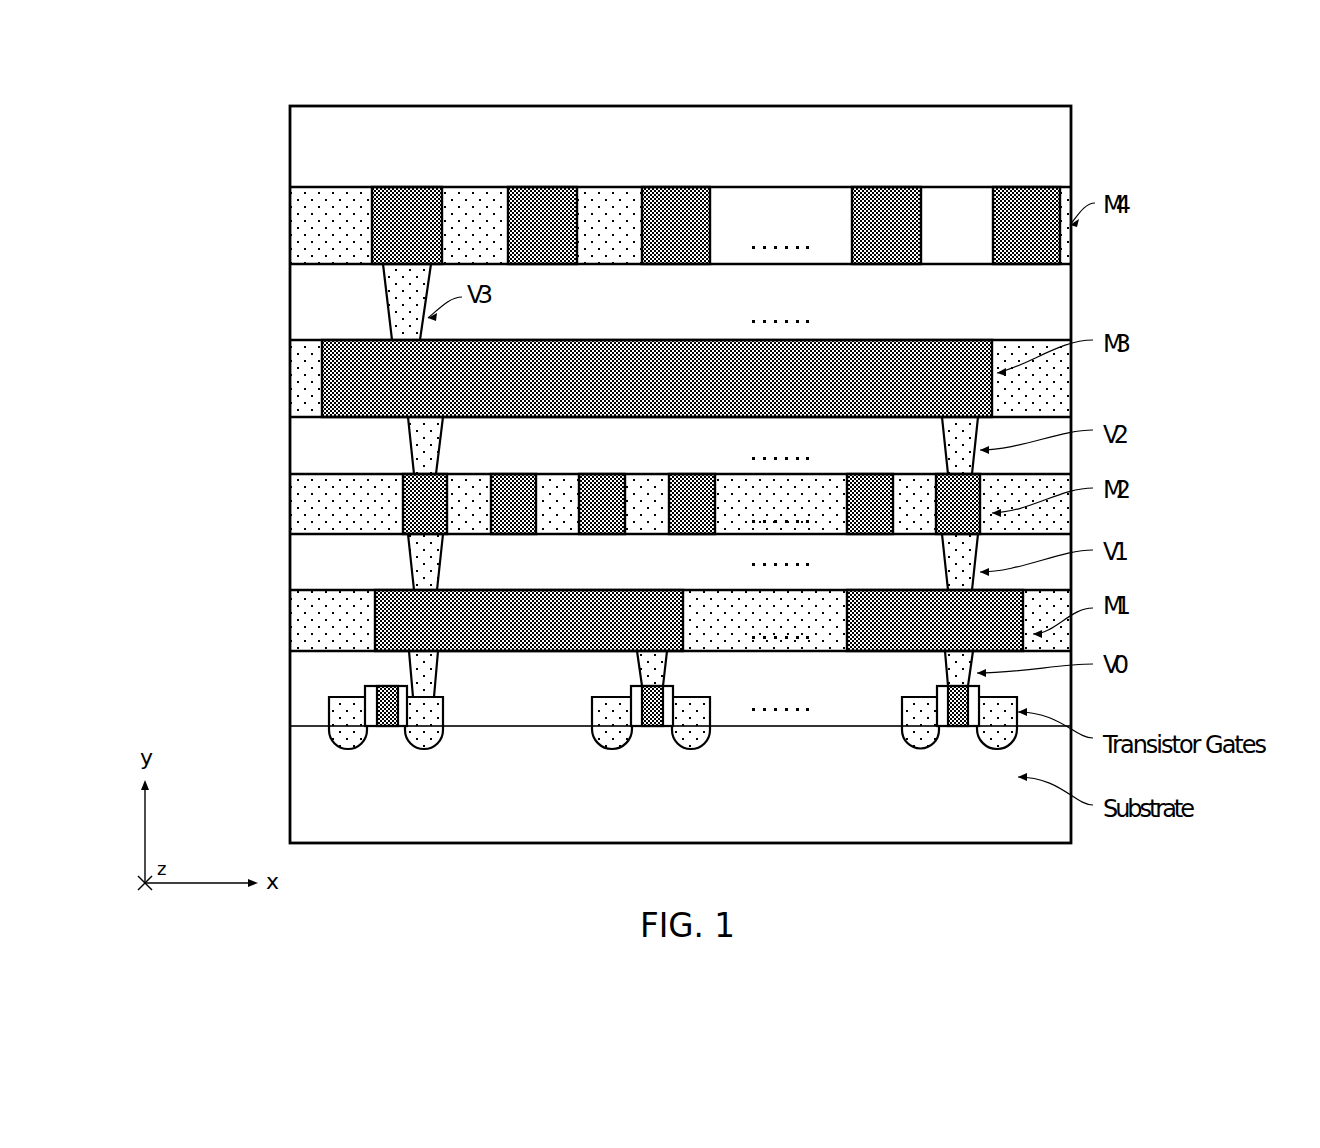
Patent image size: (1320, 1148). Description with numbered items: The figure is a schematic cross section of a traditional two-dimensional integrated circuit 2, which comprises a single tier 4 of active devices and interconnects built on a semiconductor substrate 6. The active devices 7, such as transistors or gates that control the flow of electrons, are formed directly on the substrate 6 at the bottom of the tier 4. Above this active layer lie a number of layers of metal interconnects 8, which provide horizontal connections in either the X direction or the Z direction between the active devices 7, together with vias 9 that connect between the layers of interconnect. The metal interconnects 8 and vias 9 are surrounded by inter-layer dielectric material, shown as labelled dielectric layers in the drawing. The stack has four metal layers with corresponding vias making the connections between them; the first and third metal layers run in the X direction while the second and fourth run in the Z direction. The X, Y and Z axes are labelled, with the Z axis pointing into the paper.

The two-dimensional integrated circuit 2 is at (247, 132).
The single tier 4 is at (228, 187).
The semiconductor substrate 6 is at (290, 762).
The active devices 7 is at (388, 740).
The metal interconnects 8 is at (410, 187).
The vias 9 is at (410, 297).